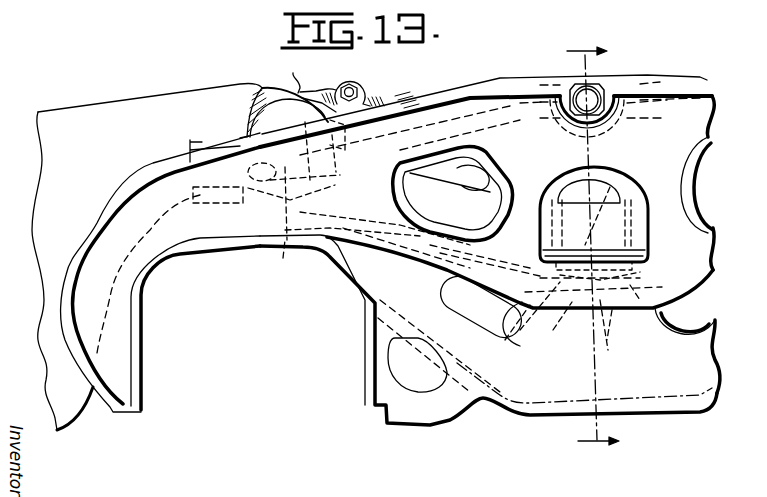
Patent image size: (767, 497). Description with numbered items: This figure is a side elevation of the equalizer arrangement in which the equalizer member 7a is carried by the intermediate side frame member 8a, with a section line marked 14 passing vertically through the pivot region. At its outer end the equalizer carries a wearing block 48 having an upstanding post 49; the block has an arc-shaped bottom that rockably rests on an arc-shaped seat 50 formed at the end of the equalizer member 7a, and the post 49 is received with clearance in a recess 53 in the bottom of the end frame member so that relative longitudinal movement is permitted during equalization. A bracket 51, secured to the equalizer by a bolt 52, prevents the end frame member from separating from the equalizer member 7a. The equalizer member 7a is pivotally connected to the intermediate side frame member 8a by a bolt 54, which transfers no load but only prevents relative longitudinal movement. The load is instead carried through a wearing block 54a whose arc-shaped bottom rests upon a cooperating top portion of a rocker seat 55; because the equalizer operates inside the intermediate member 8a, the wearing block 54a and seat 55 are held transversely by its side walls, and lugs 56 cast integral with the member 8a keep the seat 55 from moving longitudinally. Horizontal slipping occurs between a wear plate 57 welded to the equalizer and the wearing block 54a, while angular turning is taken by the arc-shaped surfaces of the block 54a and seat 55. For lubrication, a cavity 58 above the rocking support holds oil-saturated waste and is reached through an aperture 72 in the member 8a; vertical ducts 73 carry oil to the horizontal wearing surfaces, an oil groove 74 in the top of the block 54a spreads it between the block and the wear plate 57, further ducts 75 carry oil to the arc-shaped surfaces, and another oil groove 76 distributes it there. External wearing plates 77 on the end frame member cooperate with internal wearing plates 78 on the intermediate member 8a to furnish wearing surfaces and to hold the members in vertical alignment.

The equalizer member 7a is at (454, 200).
The intermediate side frame member 8a is at (667, 122).
The section line 14- 14 is at (593, 248).
The wearing block 48 is at (389, 250).
The upstanding post 49 is at (290, 218).
The arc-shaped seat 50 is at (277, 230).
The bracket 51 is at (297, 83).
The bolt 52 is at (363, 87).
The recess 53 is at (252, 143).
The bolt 54 is at (602, 92).
The wearing block 54a is at (640, 252).
The rocker seat 55 is at (538, 318).
The lugs 56 is at (523, 343).
The wear plate 57 is at (652, 251).
The cavity 58 is at (575, 182).
The aperture 72 is at (641, 197).
The vertical ducts 73 is at (612, 185).
The oil groove 74 is at (500, 284).
The ducts 75 is at (624, 317).
The oil groove 76 is at (549, 340).
The external wearing plates 77 is at (147, 257).
The internal wearing plates 78 is at (228, 203).